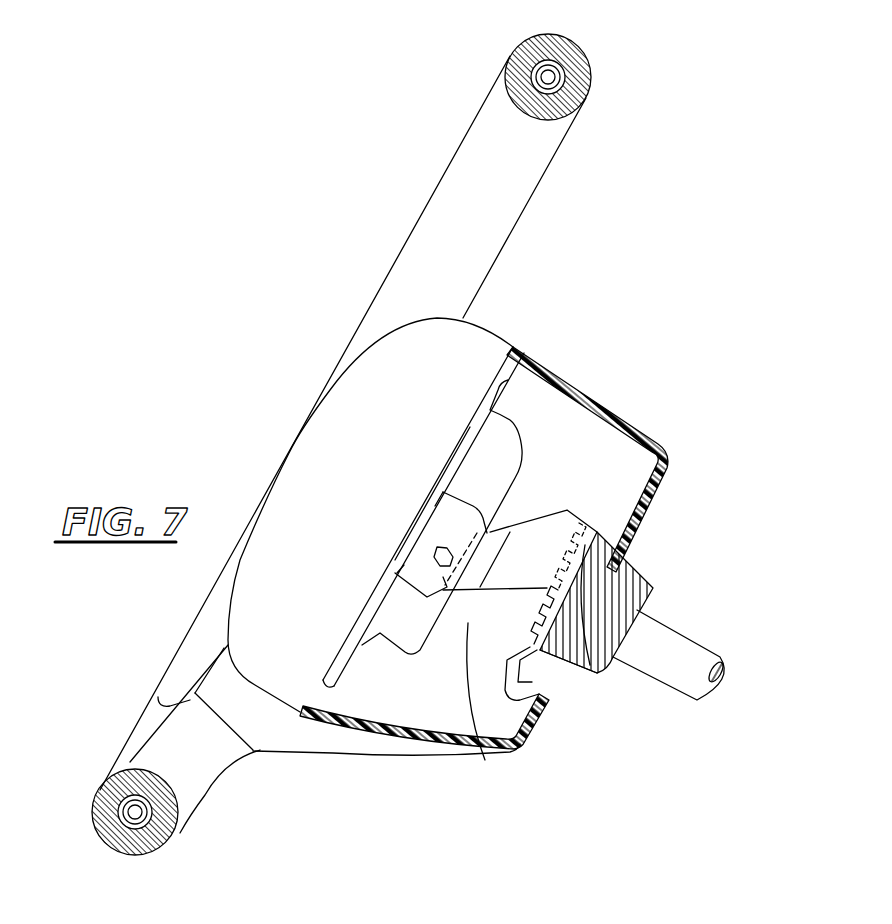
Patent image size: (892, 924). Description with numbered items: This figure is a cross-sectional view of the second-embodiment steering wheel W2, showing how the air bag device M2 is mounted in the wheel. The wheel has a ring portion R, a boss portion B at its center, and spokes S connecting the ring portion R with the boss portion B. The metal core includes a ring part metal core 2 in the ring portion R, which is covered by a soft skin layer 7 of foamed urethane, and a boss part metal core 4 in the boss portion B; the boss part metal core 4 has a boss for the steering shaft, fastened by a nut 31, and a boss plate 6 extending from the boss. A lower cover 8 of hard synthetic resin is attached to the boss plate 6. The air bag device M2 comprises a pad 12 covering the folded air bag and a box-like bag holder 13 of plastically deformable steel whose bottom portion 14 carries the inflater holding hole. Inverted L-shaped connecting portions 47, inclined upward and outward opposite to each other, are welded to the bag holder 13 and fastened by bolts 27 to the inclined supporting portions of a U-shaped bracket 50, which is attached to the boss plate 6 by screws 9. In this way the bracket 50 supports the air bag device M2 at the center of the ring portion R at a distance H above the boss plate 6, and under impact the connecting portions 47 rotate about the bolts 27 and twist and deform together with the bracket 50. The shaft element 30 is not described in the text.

The ring part metal core 2 is at (585, 74).
The skin layer 7 is at (100, 795).
The ring portion R is at (466, 146).
The spoke S is at (197, 767).
The pad 12 is at (393, 342).
The bag holder 13 is at (513, 347).
The bottom portion 14 is at (508, 418).
The bolt 27 is at (437, 552).
The connecting portion 47 is at (412, 578).
The lower cover 8 is at (662, 440).
The bracket 50 is at (585, 496).
The screw 9 is at (605, 558).
The boss part metal core 4 is at (648, 588).
The shaft 30 is at (688, 645).
The nut 31 is at (592, 672).
The boss plate 6 is at (552, 688).
The distance H is at (487, 758).
The steering wheel W2 is at (292, 155).
The air bag device M2 is at (527, 397).
The boss portion B is at (668, 761).